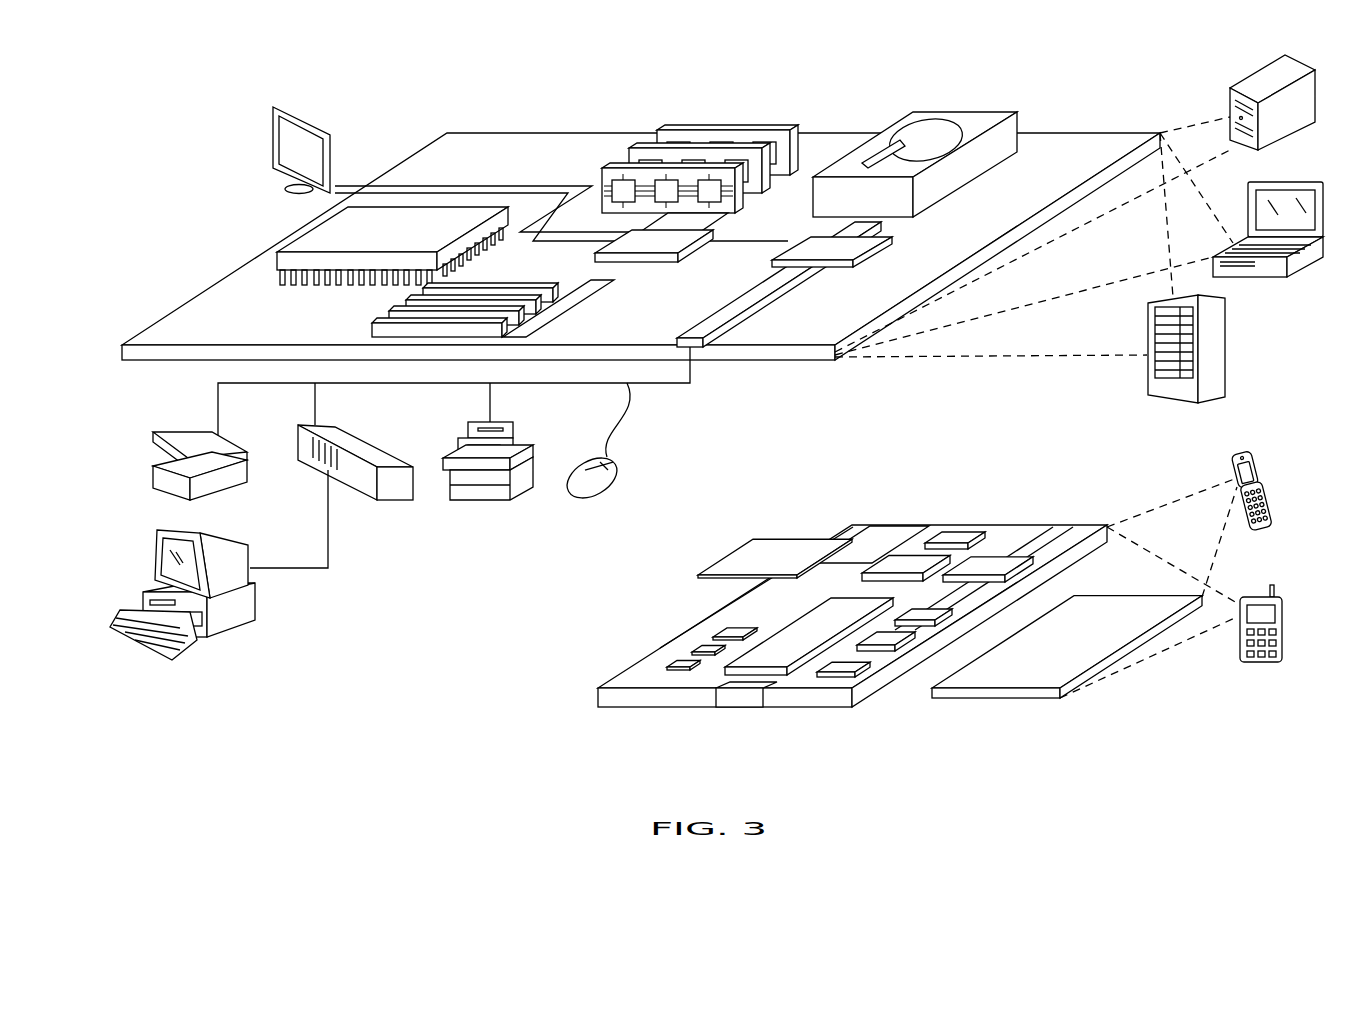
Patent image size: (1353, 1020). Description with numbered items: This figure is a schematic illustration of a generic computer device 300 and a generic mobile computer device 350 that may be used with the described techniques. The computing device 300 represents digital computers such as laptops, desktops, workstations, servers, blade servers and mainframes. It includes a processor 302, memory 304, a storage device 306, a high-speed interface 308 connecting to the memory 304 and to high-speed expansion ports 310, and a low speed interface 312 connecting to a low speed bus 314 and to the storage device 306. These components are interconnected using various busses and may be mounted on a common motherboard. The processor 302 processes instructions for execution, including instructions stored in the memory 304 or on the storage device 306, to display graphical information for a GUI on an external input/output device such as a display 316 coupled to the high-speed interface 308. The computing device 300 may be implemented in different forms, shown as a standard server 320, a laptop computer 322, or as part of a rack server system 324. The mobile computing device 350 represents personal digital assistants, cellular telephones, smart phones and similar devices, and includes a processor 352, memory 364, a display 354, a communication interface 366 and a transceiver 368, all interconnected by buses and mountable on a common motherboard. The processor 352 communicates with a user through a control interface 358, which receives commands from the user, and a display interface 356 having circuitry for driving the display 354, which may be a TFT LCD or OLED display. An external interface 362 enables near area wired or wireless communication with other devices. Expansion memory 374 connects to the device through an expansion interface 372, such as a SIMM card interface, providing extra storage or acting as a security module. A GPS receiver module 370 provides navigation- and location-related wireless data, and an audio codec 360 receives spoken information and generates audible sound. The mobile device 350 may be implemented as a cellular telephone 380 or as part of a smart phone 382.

The generic computer device 300 is at (398, 84).
The processor 302 is at (297, 232).
The memory 304 is at (730, 128).
The storage device 306 is at (956, 112).
The high-speed interface 308 is at (667, 240).
The high-speed expansion ports 310 is at (393, 312).
The low speed interface 312 is at (803, 245).
The low speed bus 314 is at (695, 331).
The display 316 is at (275, 105).
The standard server 320 is at (1248, 80).
The laptop computer 322 is at (1300, 180).
The rack server system 324 is at (1226, 348).
The generic mobile computer device 350 is at (554, 716).
The processor 352 is at (778, 643).
The display 354 is at (1105, 612).
The display interface 356 is at (855, 665).
The control interface 358 is at (893, 642).
The audio codec 360 is at (918, 615).
The external interface 362 is at (742, 695).
The memory 364 is at (693, 650).
The communication interface 366 is at (907, 558).
The transceiver 368 is at (995, 558).
The GPS receiver module 370 is at (957, 532).
The expansion interface 372 is at (833, 537).
The expansion memory 374 is at (753, 538).
The cellular telephone 380 is at (1245, 452).
The smart phone 382 is at (1257, 597).